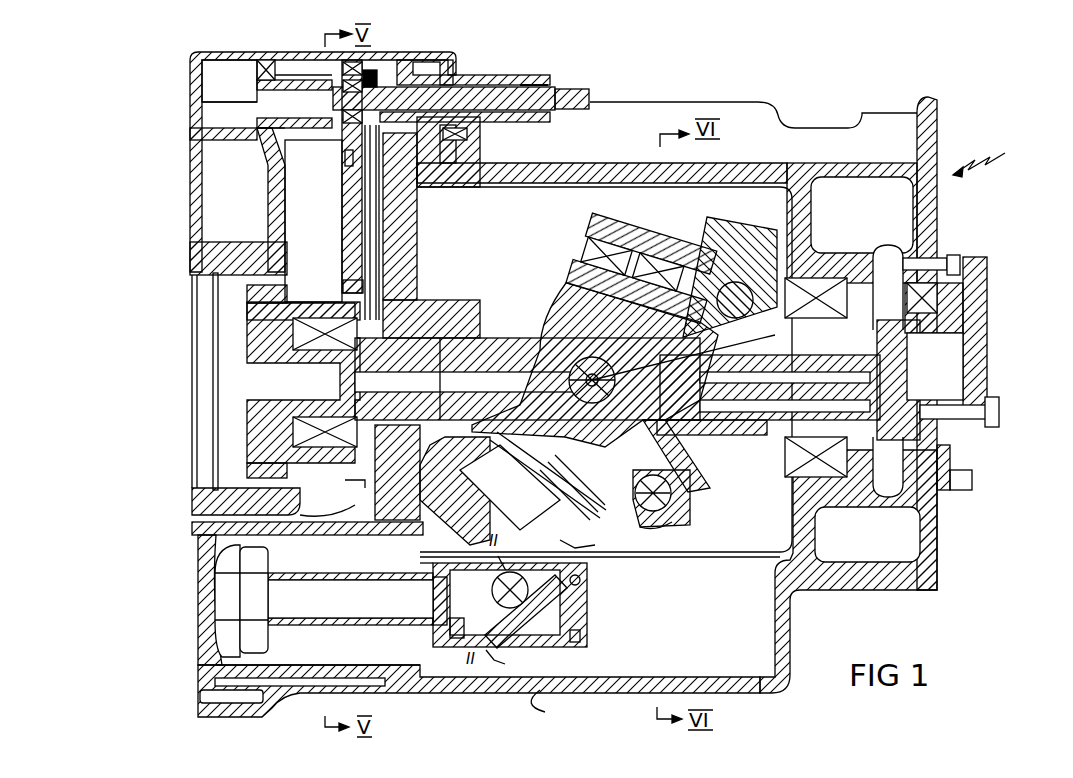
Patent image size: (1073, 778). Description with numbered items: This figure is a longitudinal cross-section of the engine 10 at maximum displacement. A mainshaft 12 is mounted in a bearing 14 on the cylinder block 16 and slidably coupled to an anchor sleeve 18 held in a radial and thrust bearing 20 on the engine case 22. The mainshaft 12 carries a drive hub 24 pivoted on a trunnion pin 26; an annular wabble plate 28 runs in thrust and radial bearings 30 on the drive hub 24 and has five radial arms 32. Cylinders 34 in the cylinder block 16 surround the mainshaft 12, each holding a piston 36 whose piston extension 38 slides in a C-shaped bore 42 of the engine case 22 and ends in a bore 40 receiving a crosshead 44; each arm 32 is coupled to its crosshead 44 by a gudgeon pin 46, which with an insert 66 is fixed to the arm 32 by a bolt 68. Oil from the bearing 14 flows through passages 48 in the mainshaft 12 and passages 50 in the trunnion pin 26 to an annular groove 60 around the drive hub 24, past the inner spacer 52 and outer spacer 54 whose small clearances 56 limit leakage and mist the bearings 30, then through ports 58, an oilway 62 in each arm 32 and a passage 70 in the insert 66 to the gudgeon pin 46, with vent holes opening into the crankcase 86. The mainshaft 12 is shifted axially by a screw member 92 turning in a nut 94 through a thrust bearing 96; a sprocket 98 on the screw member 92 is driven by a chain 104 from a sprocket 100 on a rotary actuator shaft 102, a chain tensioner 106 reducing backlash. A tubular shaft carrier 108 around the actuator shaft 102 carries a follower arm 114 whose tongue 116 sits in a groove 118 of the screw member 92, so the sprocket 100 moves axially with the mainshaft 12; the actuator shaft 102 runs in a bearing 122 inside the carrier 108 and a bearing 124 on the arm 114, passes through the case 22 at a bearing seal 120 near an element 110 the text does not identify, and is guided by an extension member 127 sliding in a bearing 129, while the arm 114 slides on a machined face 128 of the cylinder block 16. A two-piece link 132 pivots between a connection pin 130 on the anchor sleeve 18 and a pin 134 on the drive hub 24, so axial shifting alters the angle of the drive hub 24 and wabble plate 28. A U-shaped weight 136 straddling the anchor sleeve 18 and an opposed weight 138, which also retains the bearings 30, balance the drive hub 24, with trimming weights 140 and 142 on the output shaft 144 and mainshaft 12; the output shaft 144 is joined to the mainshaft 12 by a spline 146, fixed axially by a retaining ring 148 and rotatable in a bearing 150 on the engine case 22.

The engine 10 is at (990, 159).
The mainshaft 12 is at (487, 352).
The bearing 14 is at (470, 340).
The cylinder block 16 is at (302, 702).
The anchor sleeve 18 is at (728, 435).
The radial and thrust bearing 20 is at (785, 466).
The engine case 22 is at (580, 690).
The drive hub 24 is at (645, 525).
The trunnion pin 26 is at (592, 372).
The annular wabble plate 28 is at (625, 222).
The thrust and radial bearings 30 is at (580, 246).
The arms 32 is at (535, 608).
The cylinders 34 is at (333, 665).
The piston 36 is at (208, 600).
The piston extension 38 is at (290, 575).
The bore 40 is at (576, 640).
The C-shaped bore 42 is at (540, 692).
The crosshead 44 is at (568, 600).
The gudgeon pin 46 is at (517, 632).
The passages 48 is at (505, 378).
The passages 50 is at (585, 372).
The inner spacer 52 is at (460, 486).
The outer spacer 54 is at (538, 491).
The clearances 56 is at (590, 522).
The ports 58 is at (566, 540).
The annular groove 60 is at (458, 467).
The oilway 62 is at (580, 580).
The insert 66 is at (445, 596).
The bolt 68 is at (490, 628).
The passage 70 is at (433, 563).
The crankcase 86 is at (540, 208).
The screw member 92 is at (255, 310).
The nut 94 is at (248, 283).
The thrust bearing 96 is at (290, 330).
The sprocket 98 is at (335, 510).
The sprocket 100 is at (370, 72).
The rotary actuator shaft 102 is at (590, 97).
The chain 104 is at (380, 213).
The chain tensioner 106 is at (358, 235).
The shaft carrier 108 is at (520, 122).
The seal 110 is at (457, 132).
The follower arm 114 is at (345, 183).
The tongue 116 is at (350, 295).
The groove 118 is at (345, 480).
The bearing seal 120 is at (455, 70).
The bearing 122 is at (548, 85).
The bearing 124 is at (340, 86).
The extension member 127 is at (285, 92).
The parallel face 128 is at (313, 221).
The bearing 129 is at (283, 130).
The connection pin 130 is at (740, 262).
The two-piece link 132 is at (692, 460).
The pin 134 is at (672, 498).
The weight 136 is at (715, 225).
The weight 138 is at (430, 552).
The balance weight 140 is at (962, 263).
The balance weight 142 is at (250, 440).
The output shaft 144 is at (945, 350).
The spline 146 is at (855, 400).
The retaining ring 148 is at (955, 470).
The bearing 150 is at (935, 302).